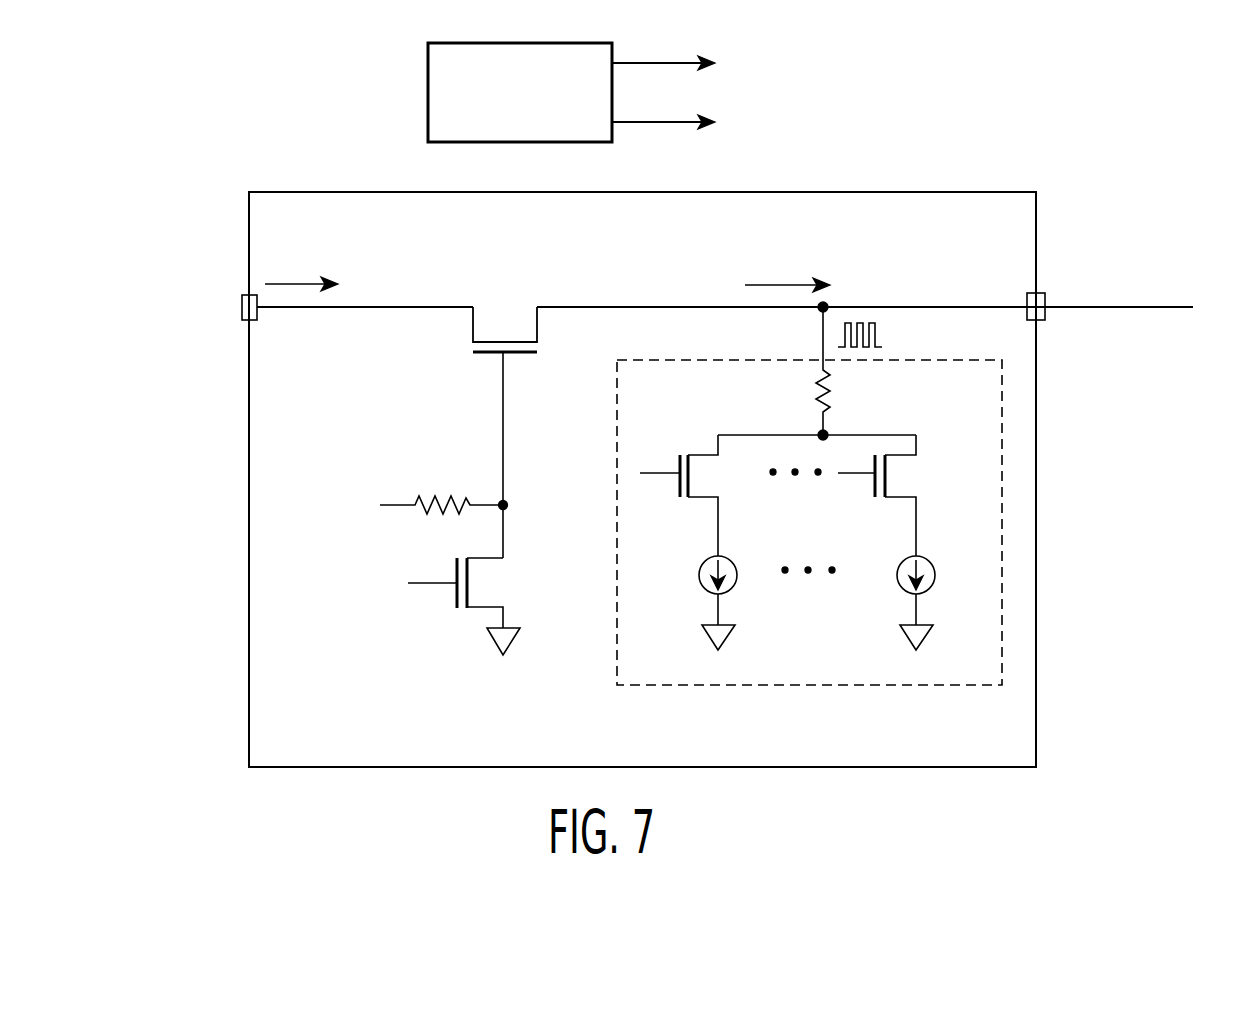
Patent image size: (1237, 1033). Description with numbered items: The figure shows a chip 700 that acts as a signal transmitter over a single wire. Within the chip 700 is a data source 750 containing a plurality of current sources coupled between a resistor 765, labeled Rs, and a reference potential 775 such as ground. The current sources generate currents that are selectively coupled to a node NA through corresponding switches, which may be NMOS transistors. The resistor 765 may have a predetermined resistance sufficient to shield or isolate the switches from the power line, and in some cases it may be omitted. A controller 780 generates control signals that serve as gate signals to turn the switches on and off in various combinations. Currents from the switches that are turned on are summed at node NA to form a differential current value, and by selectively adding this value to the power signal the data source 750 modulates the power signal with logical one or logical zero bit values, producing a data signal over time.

The controller 780 is at (428, 80).
The chip 700 is at (952, 192).
The data source 750 is at (803, 687).
The resistor 765 is at (832, 395).
The reference potential 775 is at (905, 637).